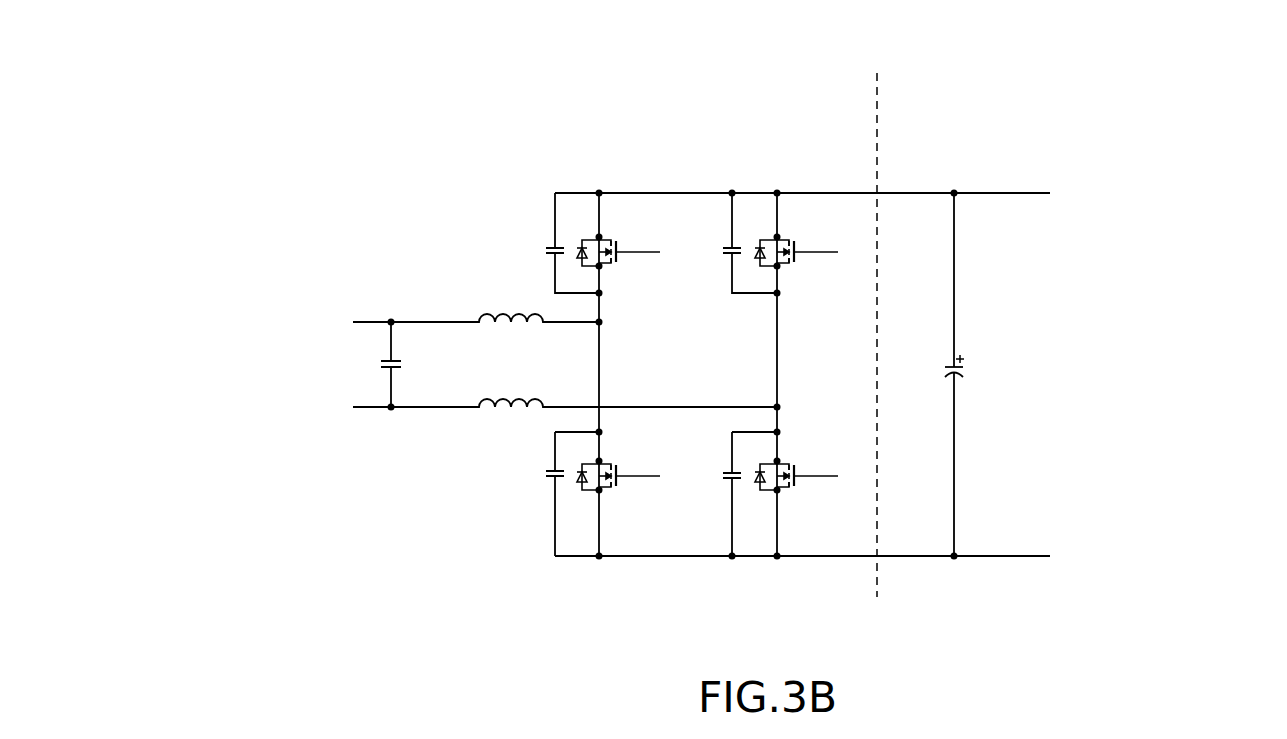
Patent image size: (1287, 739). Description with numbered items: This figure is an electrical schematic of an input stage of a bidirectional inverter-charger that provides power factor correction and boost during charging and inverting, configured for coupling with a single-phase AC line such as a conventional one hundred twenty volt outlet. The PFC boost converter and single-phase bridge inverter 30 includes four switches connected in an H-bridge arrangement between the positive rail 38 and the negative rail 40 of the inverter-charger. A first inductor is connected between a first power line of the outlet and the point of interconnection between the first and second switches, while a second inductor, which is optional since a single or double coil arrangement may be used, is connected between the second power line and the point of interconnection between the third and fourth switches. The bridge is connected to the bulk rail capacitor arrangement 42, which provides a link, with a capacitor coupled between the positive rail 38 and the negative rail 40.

The PFC boost converter / single-phase bridge inverter 30 is at (567, 175).
The link capacitor arrangement 42 is at (965, 172).
The positive rail 38 is at (1157, 237).
The negative rail 40 is at (1158, 600).